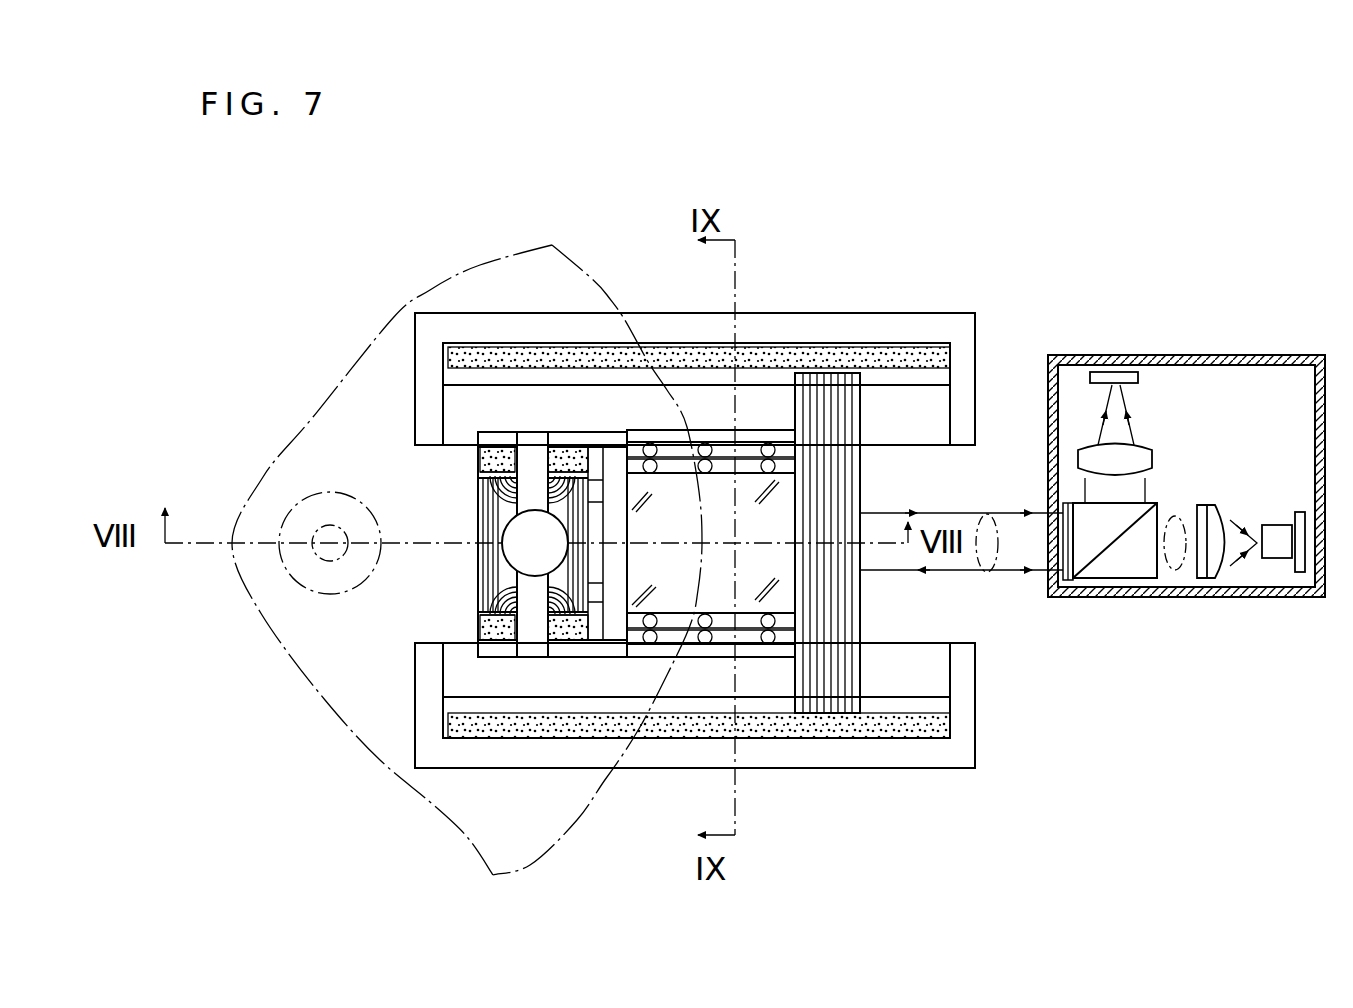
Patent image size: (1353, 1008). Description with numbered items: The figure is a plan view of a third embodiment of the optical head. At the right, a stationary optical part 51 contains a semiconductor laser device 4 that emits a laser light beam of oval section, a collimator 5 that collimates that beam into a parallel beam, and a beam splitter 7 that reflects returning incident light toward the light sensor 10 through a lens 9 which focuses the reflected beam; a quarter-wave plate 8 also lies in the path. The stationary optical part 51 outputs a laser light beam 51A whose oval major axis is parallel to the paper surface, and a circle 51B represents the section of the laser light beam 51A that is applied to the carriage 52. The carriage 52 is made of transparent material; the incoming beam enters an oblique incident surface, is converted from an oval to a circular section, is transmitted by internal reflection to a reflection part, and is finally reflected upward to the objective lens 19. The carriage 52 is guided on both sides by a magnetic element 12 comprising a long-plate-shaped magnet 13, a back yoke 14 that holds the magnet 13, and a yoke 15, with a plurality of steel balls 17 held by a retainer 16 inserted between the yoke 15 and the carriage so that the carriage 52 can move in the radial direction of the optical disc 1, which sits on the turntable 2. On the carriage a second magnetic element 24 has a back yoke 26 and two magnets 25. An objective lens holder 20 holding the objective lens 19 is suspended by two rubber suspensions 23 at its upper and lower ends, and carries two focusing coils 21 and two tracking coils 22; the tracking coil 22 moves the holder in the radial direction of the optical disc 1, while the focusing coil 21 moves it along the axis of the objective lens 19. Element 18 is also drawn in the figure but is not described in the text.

The optical disc 1 is at (600, 303).
The turntable 2 is at (333, 532).
The semiconductor laser device 4 is at (1283, 560).
The collimator 5 is at (1212, 578).
The beam splitter 7 is at (1128, 580).
The quarter-wave plate 8 is at (1068, 582).
The lens 9 is at (1141, 448).
The light sensor 10 is at (1104, 372).
The magnetic element 12 is at (772, 311).
The magnet 13 is at (802, 348).
The back yoke 14 is at (853, 320).
The yoke 15 is at (889, 405).
The retainer 16 is at (717, 450).
The steel balls 17 is at (697, 447).
The reflecting mirror 18 is at (865, 665).
The objective lens 19 is at (525, 560).
The objective lens holder 20 is at (503, 510).
The focusing coil 21 is at (497, 640).
The tracking coil 22 is at (487, 593).
The rubber suspension 23 is at (520, 438).
The magnetic element 24 is at (538, 432).
The magnet 25 is at (552, 432).
The back yoke 26 is at (562, 437).
The stationary optical part 51 is at (1210, 355).
The laser light beam 51A is at (1010, 520).
The circle 51B is at (977, 550).
The carriage 52 is at (720, 590).